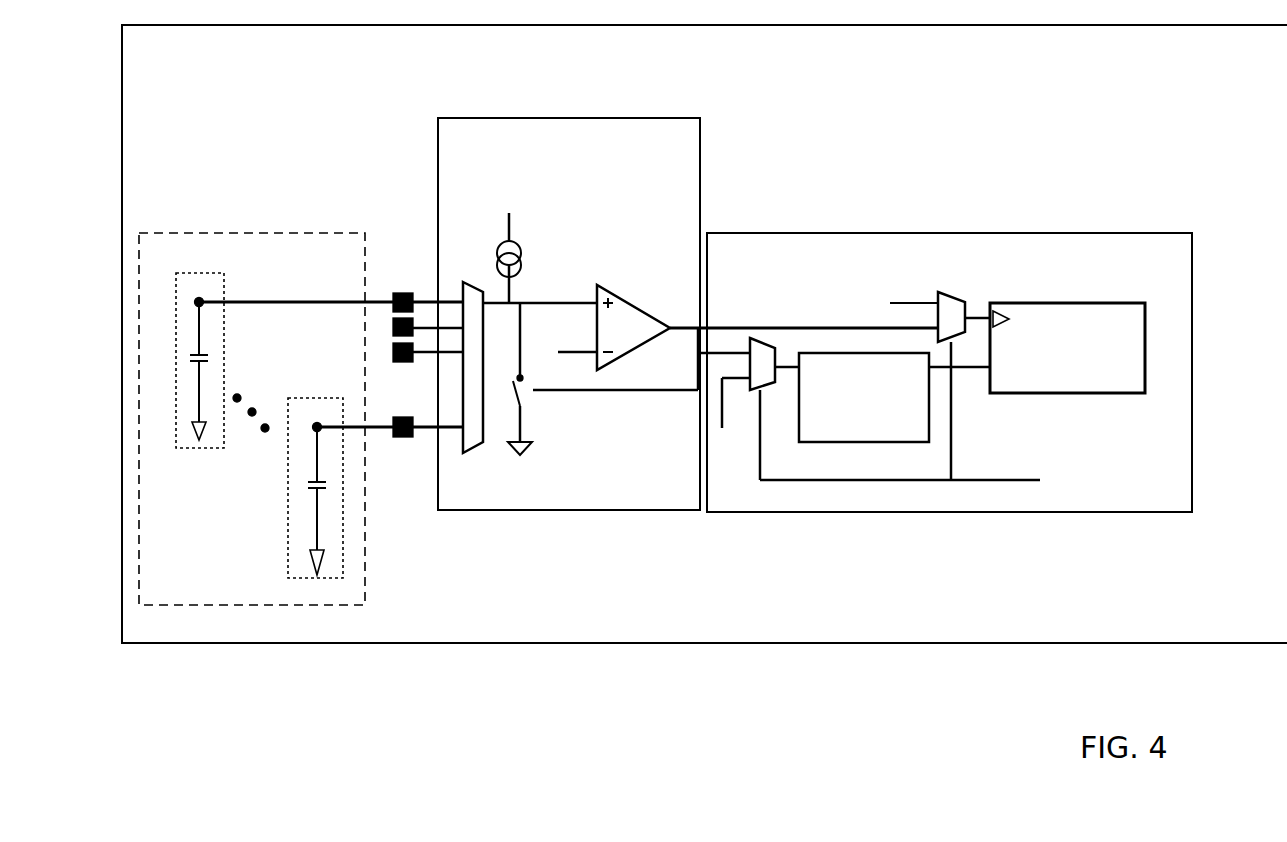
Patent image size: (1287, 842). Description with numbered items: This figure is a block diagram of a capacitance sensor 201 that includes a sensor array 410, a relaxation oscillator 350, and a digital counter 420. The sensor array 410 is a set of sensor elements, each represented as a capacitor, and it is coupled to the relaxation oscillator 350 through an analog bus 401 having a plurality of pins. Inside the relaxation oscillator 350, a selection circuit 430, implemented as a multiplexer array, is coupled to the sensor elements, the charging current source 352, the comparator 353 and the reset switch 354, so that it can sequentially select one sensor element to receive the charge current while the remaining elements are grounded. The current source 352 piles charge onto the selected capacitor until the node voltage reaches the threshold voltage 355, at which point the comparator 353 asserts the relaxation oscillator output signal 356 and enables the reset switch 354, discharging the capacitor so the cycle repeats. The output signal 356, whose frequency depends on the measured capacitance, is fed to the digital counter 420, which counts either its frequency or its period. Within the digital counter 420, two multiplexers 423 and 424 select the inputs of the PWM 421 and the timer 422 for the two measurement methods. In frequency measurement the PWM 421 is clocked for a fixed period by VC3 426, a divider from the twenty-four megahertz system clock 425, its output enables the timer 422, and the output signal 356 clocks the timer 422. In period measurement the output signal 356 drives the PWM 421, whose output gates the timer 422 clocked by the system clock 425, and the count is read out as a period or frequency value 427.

The capacitance sensor 201 is at (852, 61).
The sensor array 410 is at (212, 226).
The analog bus 401 is at (402, 143).
The relaxation oscillator 350 is at (590, 182).
The selection circuit 430 is at (478, 447).
The charging current source 352 is at (522, 250).
The comparator 353 is at (650, 306).
The threshold voltage 355 is at (556, 346).
The reset switch 354 is at (523, 402).
The relaxation oscillator output signal 356 is at (672, 330).
The digital counter 420 is at (1050, 268).
The system clock 425 is at (840, 290).
The multiplexer 424 is at (750, 340).
The VC3 426 is at (733, 455).
The PWM 421 is at (878, 431).
The multiplexer 423 is at (950, 292).
The timer 422 is at (1106, 373).
The period/frequency output 427 is at (1040, 480).